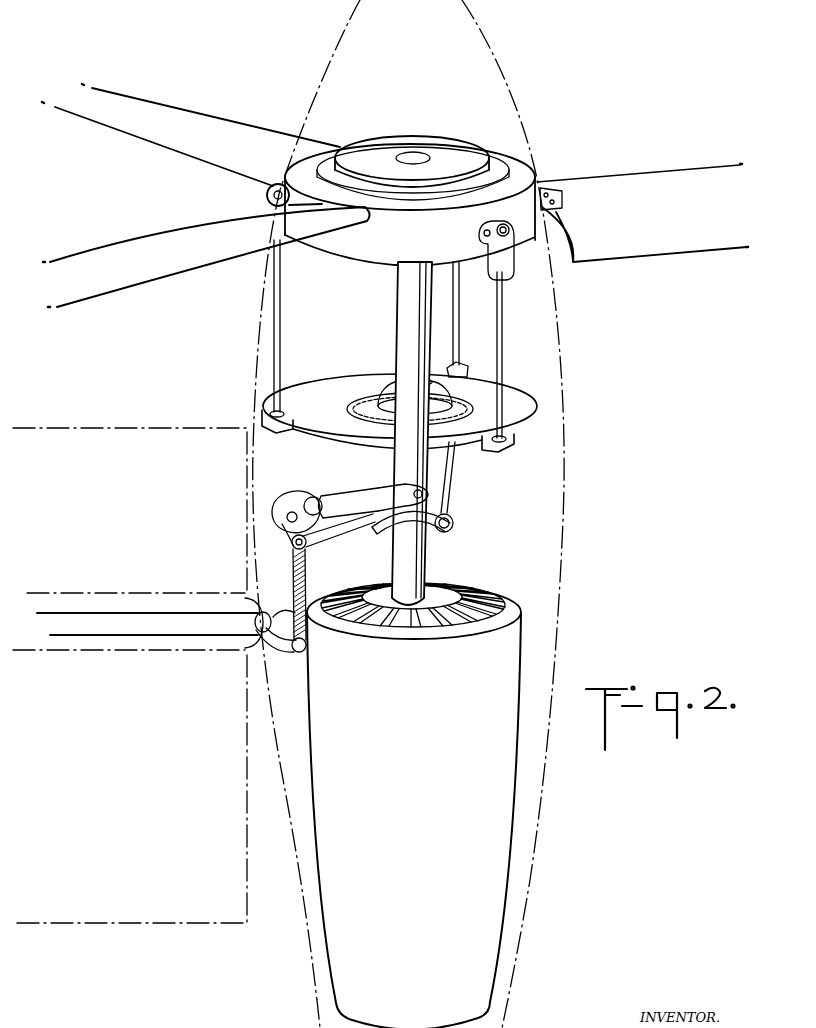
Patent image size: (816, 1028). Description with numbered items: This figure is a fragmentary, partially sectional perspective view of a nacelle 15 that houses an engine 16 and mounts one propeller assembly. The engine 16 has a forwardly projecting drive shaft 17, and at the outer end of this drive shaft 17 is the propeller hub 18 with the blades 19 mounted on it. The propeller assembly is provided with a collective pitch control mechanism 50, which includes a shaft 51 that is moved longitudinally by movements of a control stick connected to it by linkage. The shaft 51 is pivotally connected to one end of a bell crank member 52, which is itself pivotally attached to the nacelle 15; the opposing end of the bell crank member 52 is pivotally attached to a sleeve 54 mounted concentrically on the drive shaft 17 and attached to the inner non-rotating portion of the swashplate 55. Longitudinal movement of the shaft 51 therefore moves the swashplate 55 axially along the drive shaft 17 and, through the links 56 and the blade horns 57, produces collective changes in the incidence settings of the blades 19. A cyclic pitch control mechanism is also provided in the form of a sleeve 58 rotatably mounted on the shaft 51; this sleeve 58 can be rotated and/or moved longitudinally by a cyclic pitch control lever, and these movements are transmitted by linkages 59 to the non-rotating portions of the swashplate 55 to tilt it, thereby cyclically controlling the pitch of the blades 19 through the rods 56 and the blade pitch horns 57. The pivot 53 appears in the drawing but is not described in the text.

The nacelle 15 is at (553, 567).
The engine 16 is at (520, 685).
The drive shaft 17 is at (425, 580).
The propeller hub 18 is at (412, 140).
The blades 19 is at (225, 127).
The collective pitch control mechanism 50 is at (324, 486).
The shaft 51 is at (257, 608).
The bell crank member 52 is at (311, 496).
The pivot 53 is at (290, 503).
The sleeve 54 is at (433, 473).
The swashplate 55 is at (550, 399).
The links 56 is at (283, 312).
The blade horns 57 is at (266, 193).
The sleeve 58 is at (182, 630).
The linkages 59 is at (362, 515).